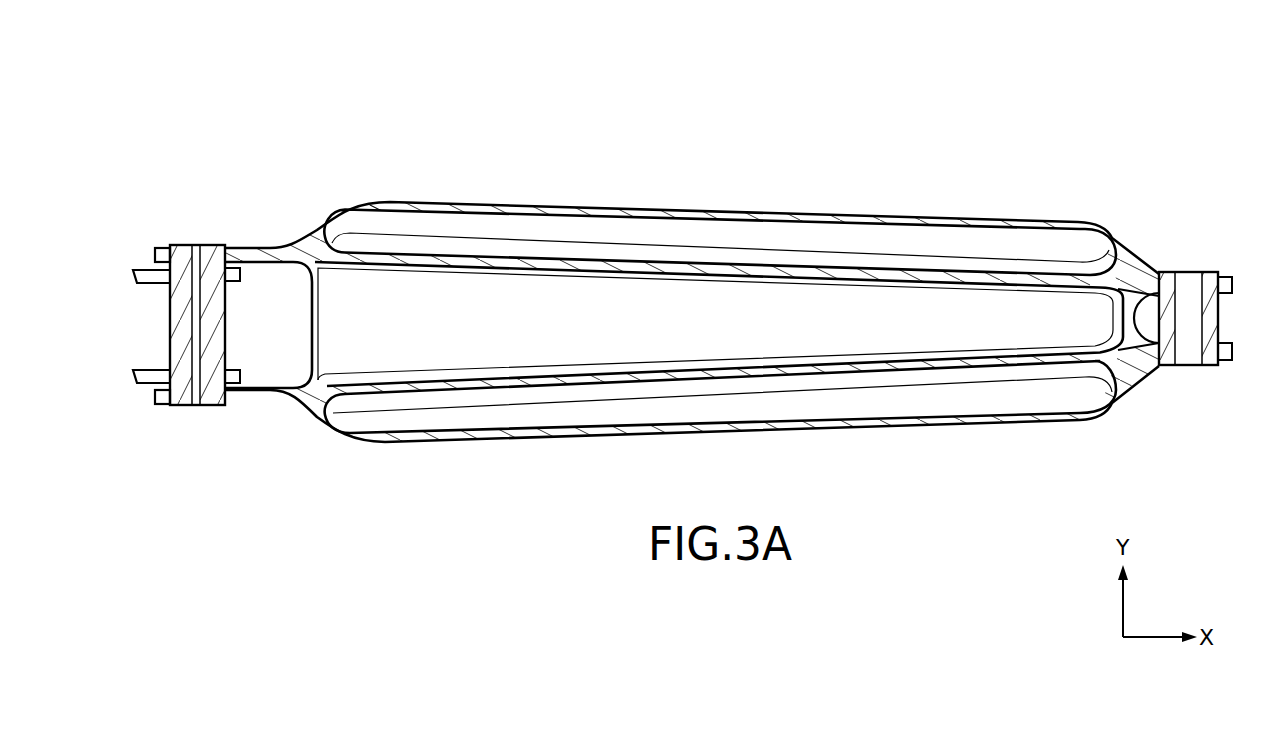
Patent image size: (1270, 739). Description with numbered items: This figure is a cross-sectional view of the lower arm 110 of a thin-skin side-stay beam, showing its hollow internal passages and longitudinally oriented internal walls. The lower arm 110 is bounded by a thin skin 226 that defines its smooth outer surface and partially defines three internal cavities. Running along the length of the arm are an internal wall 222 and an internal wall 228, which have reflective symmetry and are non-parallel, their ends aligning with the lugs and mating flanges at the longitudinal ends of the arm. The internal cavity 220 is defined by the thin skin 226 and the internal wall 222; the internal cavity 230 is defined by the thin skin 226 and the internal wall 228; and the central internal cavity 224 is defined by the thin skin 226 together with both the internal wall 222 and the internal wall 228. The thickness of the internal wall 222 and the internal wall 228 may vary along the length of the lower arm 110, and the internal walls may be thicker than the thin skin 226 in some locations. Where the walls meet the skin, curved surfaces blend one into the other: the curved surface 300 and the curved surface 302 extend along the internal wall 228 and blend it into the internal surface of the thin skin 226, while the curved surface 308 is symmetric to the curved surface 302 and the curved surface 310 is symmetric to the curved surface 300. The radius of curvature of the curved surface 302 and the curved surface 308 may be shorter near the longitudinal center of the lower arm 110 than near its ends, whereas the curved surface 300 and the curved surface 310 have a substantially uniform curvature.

The lower arm 110 is at (682, 271).
The internal cavity 220 is at (1090, 245).
The internal wall 222 is at (988, 280).
The internal cavity 224 is at (1100, 307).
The thin skin 226 is at (1065, 222).
The internal wall 228 is at (843, 368).
The internal cavity 230 is at (977, 402).
The curved surface 300 is at (1018, 373).
The curved surface 302 is at (668, 365).
The curved surface 308 is at (880, 282).
The curved surface 310 is at (923, 262).